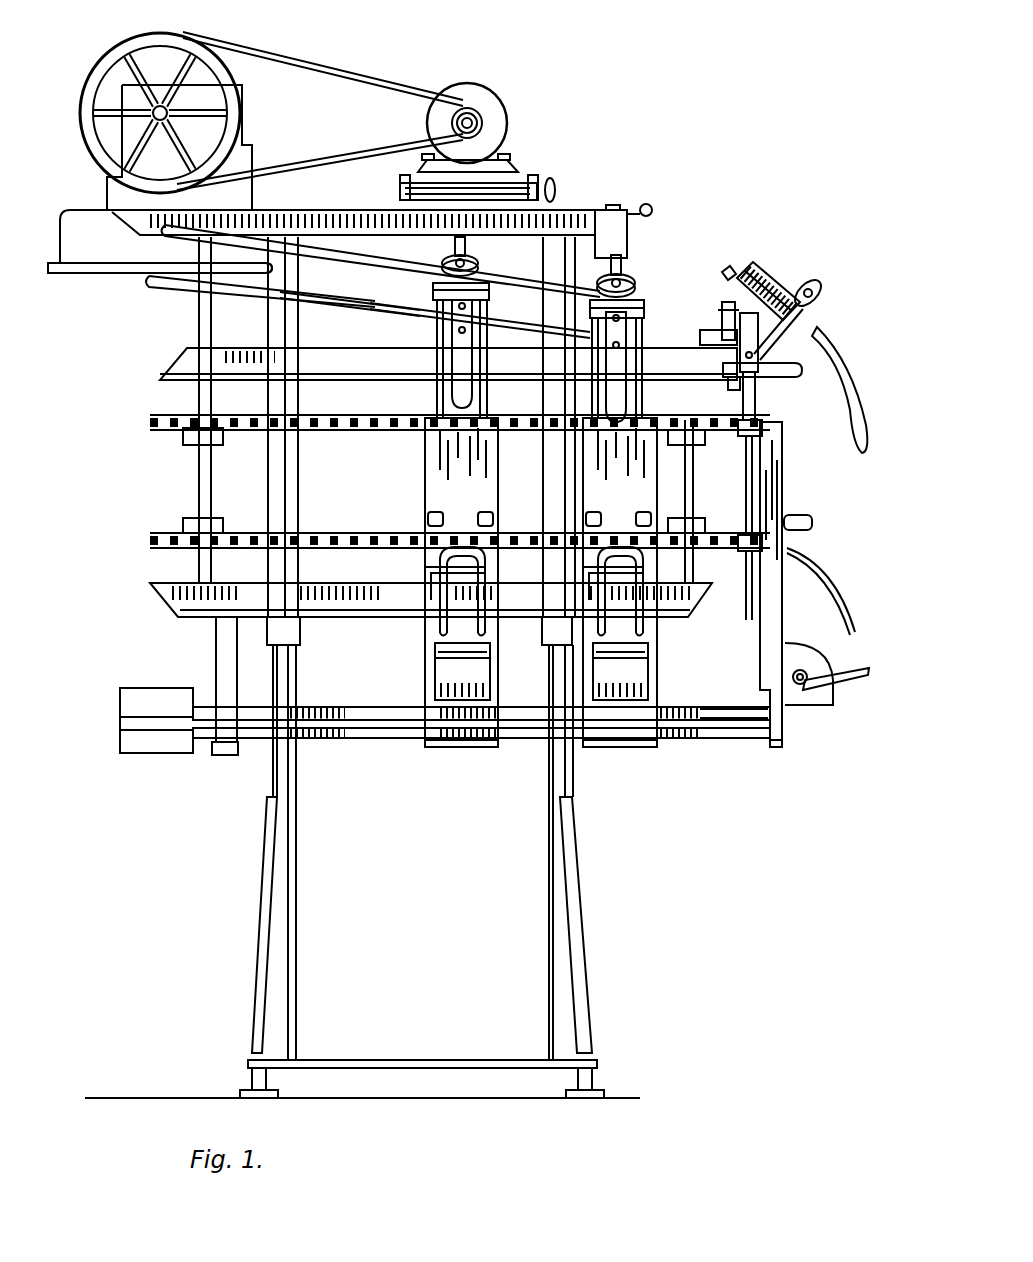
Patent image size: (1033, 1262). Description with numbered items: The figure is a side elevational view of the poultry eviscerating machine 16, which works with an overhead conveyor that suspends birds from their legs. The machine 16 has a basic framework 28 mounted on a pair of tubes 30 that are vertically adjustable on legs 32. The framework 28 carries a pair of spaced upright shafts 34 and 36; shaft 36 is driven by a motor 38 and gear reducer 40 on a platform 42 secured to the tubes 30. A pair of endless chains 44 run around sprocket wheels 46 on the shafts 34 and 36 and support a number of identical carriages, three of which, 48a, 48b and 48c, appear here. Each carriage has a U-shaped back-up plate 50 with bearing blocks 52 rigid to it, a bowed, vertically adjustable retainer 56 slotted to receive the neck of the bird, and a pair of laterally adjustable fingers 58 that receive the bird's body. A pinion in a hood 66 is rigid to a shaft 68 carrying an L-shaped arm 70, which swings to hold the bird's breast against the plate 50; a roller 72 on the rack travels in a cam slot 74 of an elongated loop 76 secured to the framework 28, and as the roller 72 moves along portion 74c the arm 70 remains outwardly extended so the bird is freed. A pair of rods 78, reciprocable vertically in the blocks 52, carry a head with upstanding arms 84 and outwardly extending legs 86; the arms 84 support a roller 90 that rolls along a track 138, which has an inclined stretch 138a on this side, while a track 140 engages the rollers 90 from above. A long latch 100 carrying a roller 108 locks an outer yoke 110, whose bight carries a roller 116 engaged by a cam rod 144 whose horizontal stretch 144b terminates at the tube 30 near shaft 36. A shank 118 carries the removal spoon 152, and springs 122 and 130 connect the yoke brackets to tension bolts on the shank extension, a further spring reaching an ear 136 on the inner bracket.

The eviscerating machine 16 is at (182, 768).
The framework 28 is at (153, 377).
The tubes 30 is at (299, 480).
The legs 32 is at (296, 946).
The upright shaft 34 is at (694, 481).
The upright shaft 36 is at (198, 325).
The motor 38 is at (500, 125).
The gear reducer 40 is at (238, 164).
The platform 42 is at (562, 212).
The endless chains 44 is at (318, 418).
The sprocket wheels 46 is at (224, 436).
The carriage 48a is at (438, 759).
The carriage 48b is at (655, 759).
The carriage 48c is at (779, 752).
The back-up plate 50 is at (483, 737).
The bearing blocks 52 is at (762, 426).
The retainer 56 is at (437, 632).
The fingers 58 is at (443, 517).
The hood 66 is at (445, 690).
The shaft 68 is at (492, 670).
The L-shaped arm 70 is at (472, 556).
The roller 72 is at (756, 710).
The cam slot 74 is at (320, 712).
The slot portion 74c is at (372, 734).
The elongated loop 76 is at (256, 752).
The rods 78 is at (766, 392).
The arms 84 is at (740, 348).
The legs 86 is at (777, 364).
The roller 90 is at (720, 306).
The long latch 100 is at (807, 366).
The roller 108 is at (733, 381).
The outer yoke 110 is at (490, 287).
The roller 116 is at (478, 264).
The shank 118 is at (455, 245).
The spring 122 is at (740, 265).
The spring 130 is at (722, 272).
The ear 136 is at (420, 313).
The track 138 is at (143, 290).
The inclined stretch 138a is at (318, 307).
The track 140 is at (402, 268).
The cam rod 144 is at (96, 248).
The horizontal stretch 144b is at (179, 267).
The spoon 152 is at (452, 365).